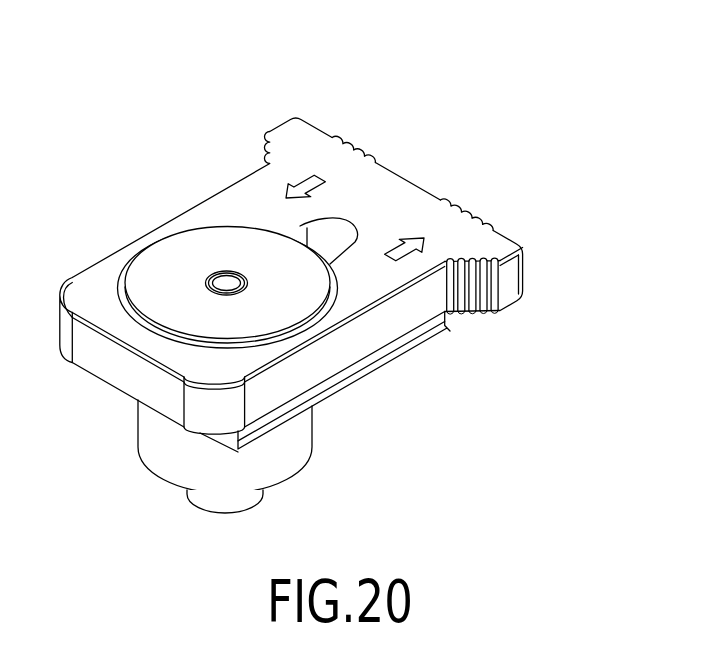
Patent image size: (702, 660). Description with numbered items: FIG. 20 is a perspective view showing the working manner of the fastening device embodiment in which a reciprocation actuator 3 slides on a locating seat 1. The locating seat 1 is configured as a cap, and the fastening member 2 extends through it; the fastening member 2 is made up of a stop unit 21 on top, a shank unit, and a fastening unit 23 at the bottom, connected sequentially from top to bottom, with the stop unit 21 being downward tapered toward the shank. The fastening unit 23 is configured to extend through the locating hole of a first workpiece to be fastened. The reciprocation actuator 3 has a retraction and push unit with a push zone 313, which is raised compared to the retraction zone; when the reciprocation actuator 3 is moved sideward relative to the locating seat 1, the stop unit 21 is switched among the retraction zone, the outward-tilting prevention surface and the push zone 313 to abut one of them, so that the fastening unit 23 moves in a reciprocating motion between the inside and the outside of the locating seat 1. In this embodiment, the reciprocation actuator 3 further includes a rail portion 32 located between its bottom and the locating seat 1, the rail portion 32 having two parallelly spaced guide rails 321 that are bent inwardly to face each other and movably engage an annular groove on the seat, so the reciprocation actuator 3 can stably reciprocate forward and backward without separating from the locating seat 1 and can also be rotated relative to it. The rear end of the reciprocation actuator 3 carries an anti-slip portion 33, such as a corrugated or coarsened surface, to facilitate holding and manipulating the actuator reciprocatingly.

The locating seat 1 is at (116, 441).
The fastening member 2 is at (197, 227).
The stop unit 21 is at (158, 263).
The fastening unit 23 is at (242, 500).
The reciprocation actuator 3 is at (226, 168).
The push zone 313 is at (333, 229).
The rail portion 32 is at (341, 423).
The guide rails 321 is at (360, 368).
The anti-slip portion 33 is at (450, 200).